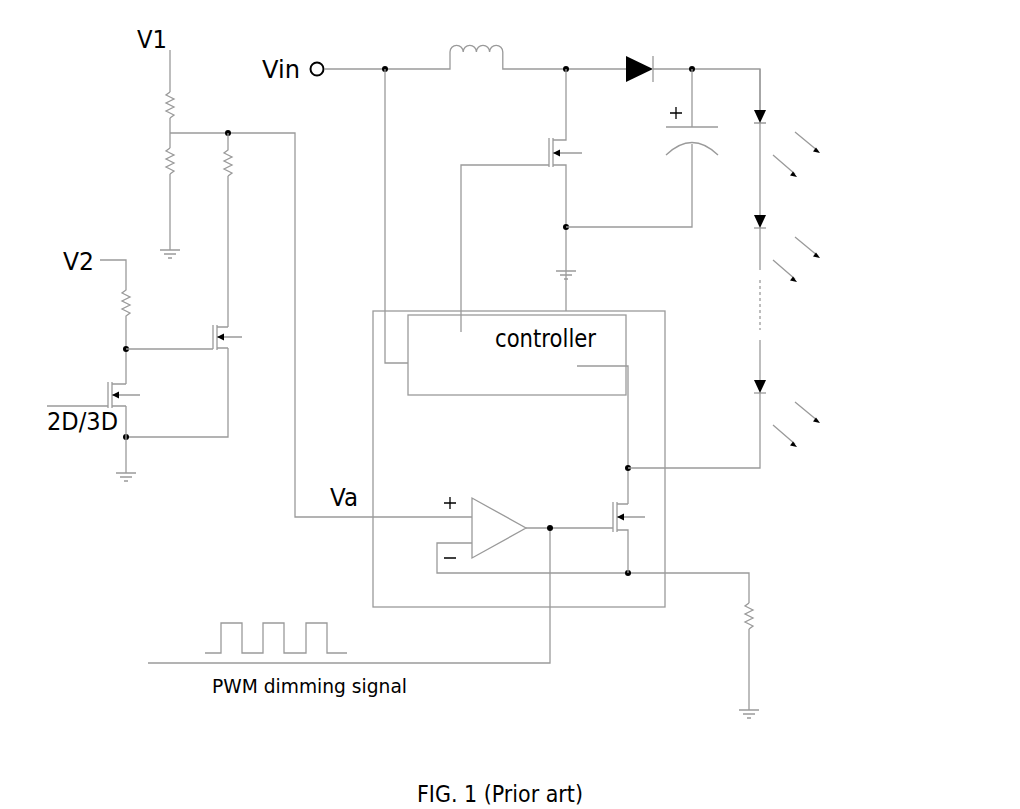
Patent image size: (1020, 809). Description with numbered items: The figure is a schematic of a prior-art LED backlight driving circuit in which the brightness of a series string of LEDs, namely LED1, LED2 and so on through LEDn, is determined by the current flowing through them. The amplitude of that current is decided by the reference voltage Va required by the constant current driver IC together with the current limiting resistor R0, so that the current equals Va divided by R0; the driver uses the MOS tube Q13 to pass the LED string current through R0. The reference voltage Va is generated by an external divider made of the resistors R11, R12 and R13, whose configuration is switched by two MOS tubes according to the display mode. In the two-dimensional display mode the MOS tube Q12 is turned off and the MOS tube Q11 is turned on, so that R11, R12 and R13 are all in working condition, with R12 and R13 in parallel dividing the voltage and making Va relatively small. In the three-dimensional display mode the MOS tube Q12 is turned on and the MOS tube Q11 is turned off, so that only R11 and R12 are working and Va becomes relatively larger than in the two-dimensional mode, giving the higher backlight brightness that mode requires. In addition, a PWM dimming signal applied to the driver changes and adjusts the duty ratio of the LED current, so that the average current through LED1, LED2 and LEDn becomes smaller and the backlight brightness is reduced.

The resistor R11 is at (192, 108).
The resistor R12 is at (146, 160).
The resistor R13 is at (250, 154).
The MOS tube Q11 is at (206, 330).
The MOS tube Q12 is at (101, 388).
The MOS tube Q13 is at (606, 534).
The current limiting resistor R0 is at (731, 617).
The LED LED1 is at (802, 123).
The LED LED2 is at (805, 241).
The LED LEDn is at (805, 408).